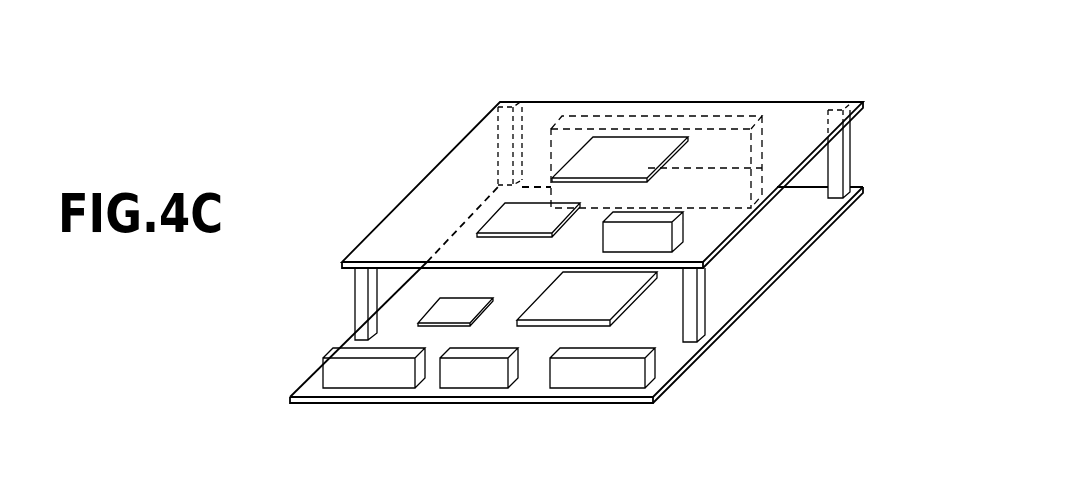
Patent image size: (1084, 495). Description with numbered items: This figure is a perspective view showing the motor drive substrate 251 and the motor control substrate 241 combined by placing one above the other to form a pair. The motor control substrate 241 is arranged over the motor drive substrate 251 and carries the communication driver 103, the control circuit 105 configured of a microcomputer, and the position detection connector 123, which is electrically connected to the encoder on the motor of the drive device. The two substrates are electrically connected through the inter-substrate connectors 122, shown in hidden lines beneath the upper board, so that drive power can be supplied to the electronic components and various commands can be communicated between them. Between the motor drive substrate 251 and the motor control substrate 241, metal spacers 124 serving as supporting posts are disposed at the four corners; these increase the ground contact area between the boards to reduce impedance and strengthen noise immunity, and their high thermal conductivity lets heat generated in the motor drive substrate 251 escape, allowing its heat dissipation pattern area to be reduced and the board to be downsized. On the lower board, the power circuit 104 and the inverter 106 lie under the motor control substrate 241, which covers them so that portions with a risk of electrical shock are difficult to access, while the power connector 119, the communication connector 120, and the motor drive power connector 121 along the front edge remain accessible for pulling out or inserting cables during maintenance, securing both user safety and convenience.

The motor control substrate 241 is at (377, 222).
The motor drive substrate 251 is at (690, 378).
The metal spacers 124 is at (512, 103).
The inter-substrate connector 122 is at (657, 116).
The control circuit 105 is at (593, 162).
The communication driver 103 is at (493, 215).
The position detection connector 123 is at (677, 228).
The power circuit 104 is at (460, 310).
The inverter 106 is at (567, 305).
The power connector 119 is at (375, 388).
The communication connector 120 is at (487, 388).
The motor drive power connector 121 is at (598, 388).